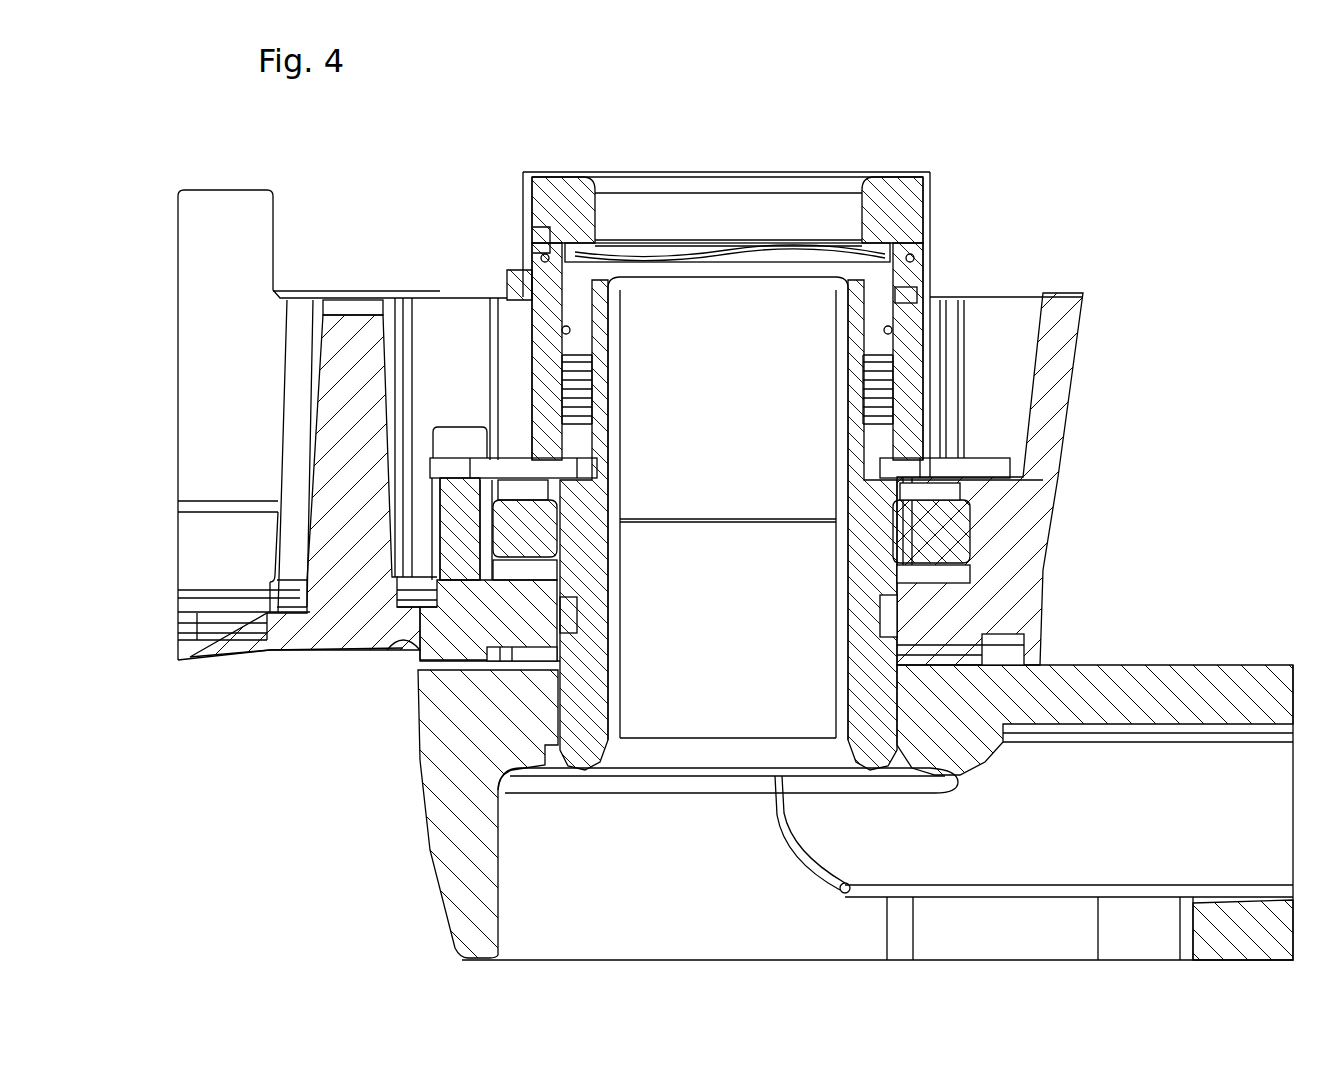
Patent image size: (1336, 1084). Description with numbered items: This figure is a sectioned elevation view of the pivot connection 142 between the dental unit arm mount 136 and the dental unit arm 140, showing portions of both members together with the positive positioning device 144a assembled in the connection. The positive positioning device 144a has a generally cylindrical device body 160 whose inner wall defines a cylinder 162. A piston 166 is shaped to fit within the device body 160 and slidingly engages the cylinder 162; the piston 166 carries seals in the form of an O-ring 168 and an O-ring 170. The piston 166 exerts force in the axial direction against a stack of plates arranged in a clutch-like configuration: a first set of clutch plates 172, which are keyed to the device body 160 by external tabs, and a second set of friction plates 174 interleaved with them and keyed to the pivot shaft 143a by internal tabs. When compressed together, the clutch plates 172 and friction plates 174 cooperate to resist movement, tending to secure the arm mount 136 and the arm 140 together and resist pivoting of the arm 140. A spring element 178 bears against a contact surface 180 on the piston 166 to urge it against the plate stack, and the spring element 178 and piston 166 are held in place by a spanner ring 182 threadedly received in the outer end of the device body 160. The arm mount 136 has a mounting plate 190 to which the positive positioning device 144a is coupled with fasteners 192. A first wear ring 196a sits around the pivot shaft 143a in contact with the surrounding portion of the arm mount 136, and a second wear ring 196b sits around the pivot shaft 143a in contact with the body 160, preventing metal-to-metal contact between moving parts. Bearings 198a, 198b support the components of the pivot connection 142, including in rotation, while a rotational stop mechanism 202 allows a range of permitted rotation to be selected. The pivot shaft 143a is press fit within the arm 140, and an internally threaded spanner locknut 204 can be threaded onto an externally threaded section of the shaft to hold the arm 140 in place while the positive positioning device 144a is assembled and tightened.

The dental unit arm mount 136 is at (1077, 400).
The dental unit arm 140 is at (1163, 667).
The pivot connection 142 is at (1172, 110).
The pivot shaft 143a is at (832, 297).
The positive positioning device 144a is at (1123, 195).
The device body 160 is at (933, 270).
The cylinder 162 is at (898, 292).
The piston 166 is at (540, 237).
The O-ring 168 is at (545, 258).
The O-ring 170 is at (565, 323).
The clutch plates 172 is at (870, 413).
The friction plates 174 is at (605, 413).
The spring element 178 is at (828, 243).
The contact surface 180 is at (884, 246).
The spanner ring 182 is at (568, 178).
The mounting plate 190 is at (987, 458).
The fasteners 192 is at (923, 478).
The first wear ring 196a is at (892, 617).
The second wear ring 196b is at (587, 453).
The bearing 198a is at (503, 657).
The bearing 198b is at (513, 577).
The rotational stop mechanism 202 is at (1000, 653).
The spanner locknut 204 is at (950, 543).